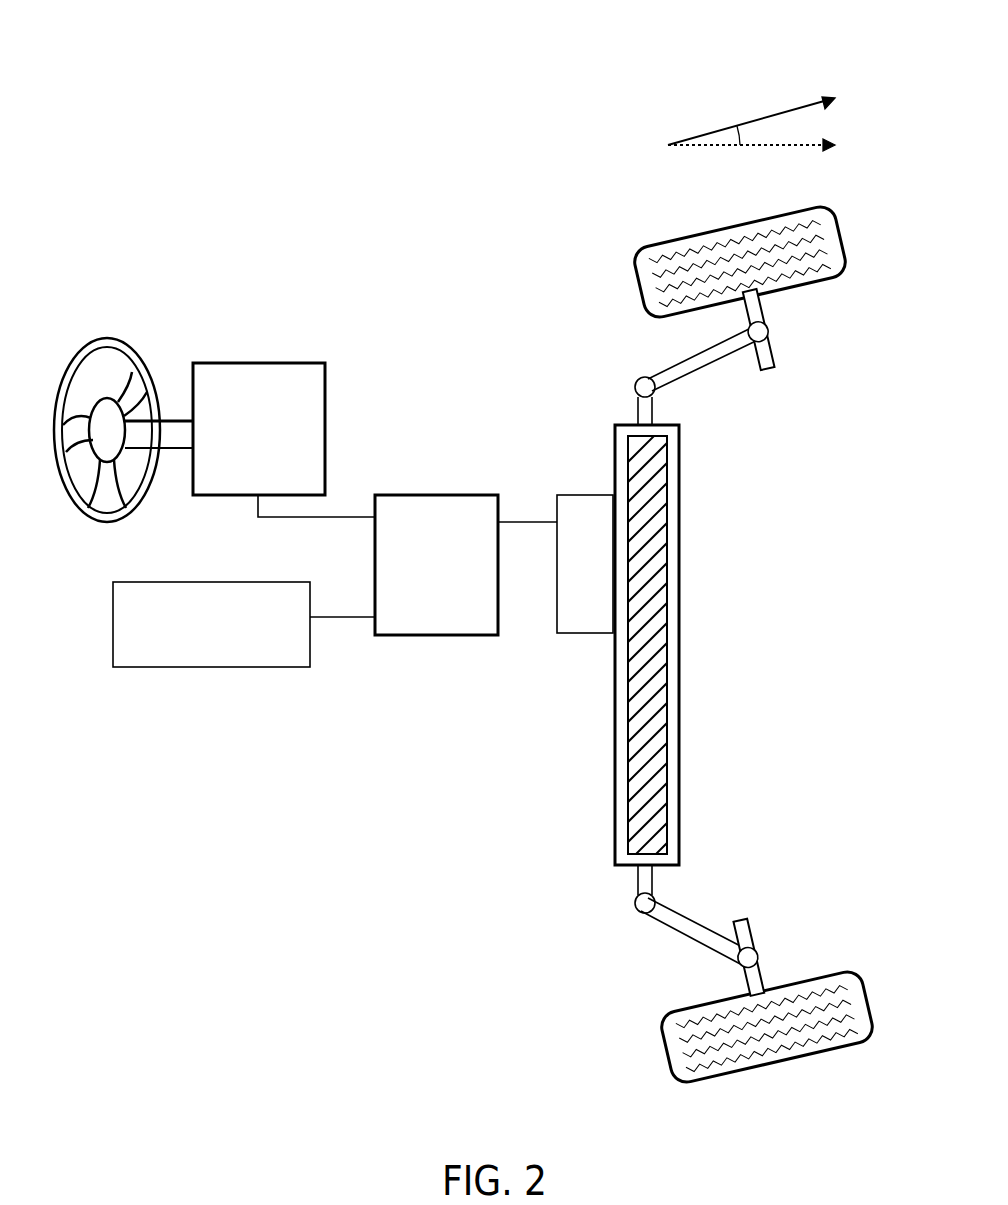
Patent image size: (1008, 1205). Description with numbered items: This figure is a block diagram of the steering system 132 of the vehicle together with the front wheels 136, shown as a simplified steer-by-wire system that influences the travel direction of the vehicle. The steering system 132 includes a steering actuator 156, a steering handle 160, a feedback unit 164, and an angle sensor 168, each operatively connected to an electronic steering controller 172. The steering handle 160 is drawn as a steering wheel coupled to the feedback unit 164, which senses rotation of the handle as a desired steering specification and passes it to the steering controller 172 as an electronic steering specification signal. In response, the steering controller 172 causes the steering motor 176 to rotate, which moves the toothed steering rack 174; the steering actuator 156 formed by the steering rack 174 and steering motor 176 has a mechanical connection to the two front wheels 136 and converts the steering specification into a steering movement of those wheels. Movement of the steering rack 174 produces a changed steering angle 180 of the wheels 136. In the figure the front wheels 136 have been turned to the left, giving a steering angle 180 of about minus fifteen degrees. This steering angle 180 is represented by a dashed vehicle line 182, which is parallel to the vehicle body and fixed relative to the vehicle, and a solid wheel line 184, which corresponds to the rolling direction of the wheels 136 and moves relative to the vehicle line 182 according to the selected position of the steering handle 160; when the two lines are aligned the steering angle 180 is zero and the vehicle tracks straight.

The steering system 132 is at (211, 271).
The front wheels 136 is at (665, 240).
The steering actuator 156 is at (520, 437).
The steering handle 160 is at (120, 338).
The feedback unit 164 is at (277, 362).
The angle sensor 168 is at (260, 667).
The electronic steering controller 172 is at (436, 490).
The steering rack 174 is at (613, 704).
The steering motor 176 is at (571, 634).
The steering angle 180 is at (772, 114).
The vehicle line 182 is at (763, 148).
The wheel line 184 is at (698, 132).